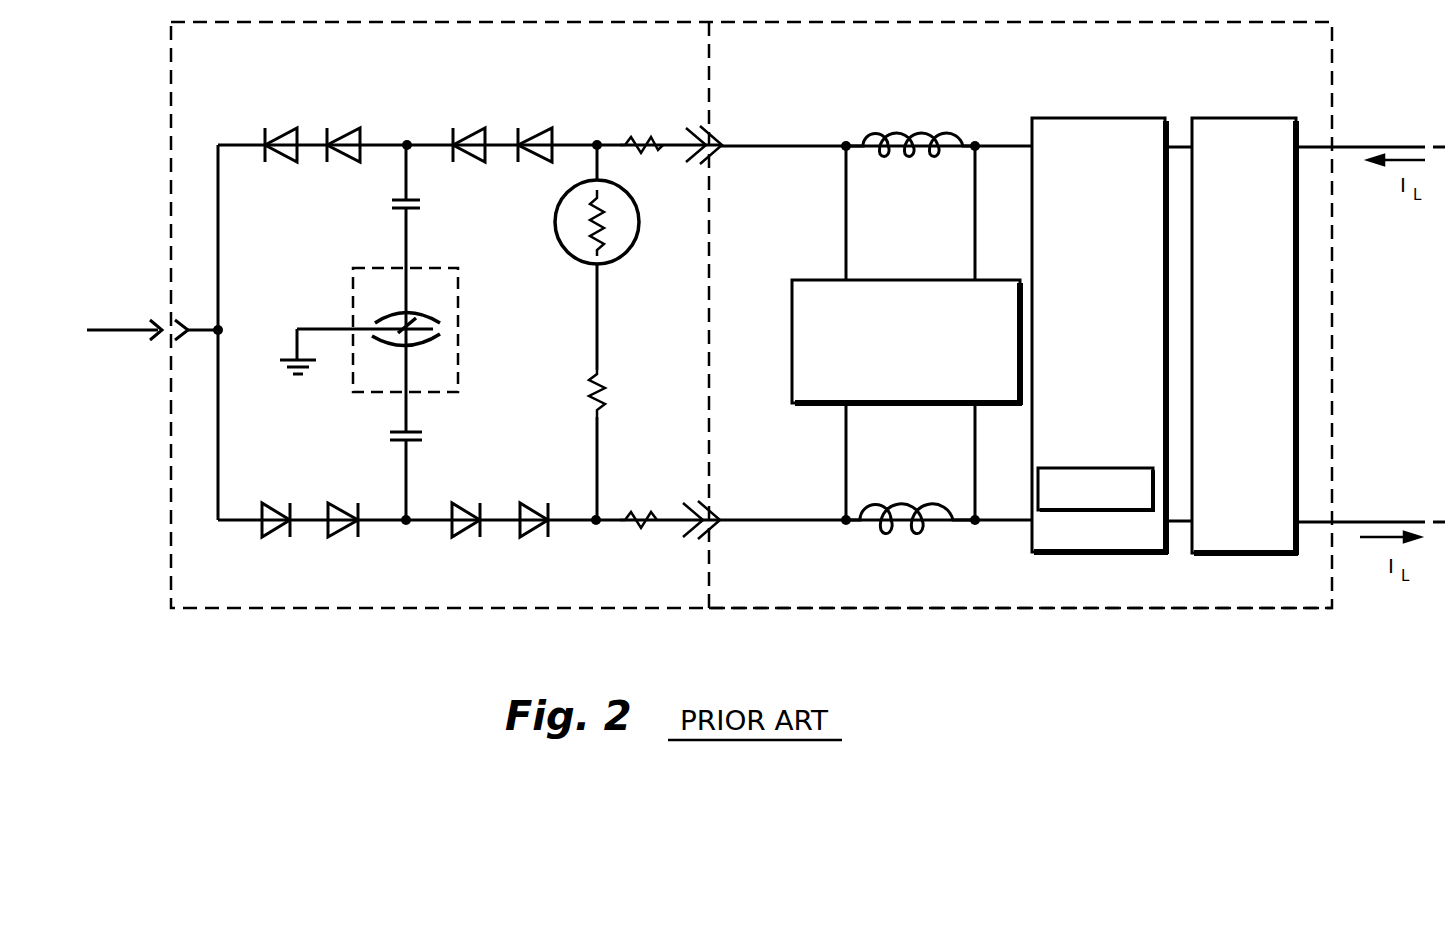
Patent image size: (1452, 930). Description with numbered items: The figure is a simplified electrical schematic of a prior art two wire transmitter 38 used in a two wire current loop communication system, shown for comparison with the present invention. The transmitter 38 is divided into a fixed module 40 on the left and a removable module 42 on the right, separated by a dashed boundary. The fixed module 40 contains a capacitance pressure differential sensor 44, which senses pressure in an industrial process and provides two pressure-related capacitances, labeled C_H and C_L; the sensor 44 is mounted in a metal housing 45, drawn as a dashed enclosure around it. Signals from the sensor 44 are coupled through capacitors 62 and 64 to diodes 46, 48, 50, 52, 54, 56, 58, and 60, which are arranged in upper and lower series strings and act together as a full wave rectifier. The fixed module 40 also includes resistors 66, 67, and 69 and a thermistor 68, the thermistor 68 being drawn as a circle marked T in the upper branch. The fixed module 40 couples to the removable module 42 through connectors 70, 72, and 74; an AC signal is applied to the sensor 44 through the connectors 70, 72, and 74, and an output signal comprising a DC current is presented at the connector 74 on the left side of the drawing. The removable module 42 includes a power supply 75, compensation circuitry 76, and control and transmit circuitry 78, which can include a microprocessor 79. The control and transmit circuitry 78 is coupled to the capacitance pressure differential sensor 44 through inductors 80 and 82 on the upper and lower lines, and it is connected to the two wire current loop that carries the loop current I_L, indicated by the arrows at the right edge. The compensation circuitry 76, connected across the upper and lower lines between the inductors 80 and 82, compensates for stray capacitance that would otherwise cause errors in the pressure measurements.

The two wire transmitter 38 is at (160, 105).
The fixed module 40 is at (338, 612).
The removable module 42 is at (912, 612).
The capacitance pressure differential sensor 44 is at (436, 338).
The metal housing 45 is at (444, 276).
The diode 46 is at (278, 126).
The diode 48 is at (355, 126).
The diode 50 is at (465, 126).
The diode 52 is at (530, 126).
The diode 54 is at (265, 535).
The diode 56 is at (328, 533).
The diode 58 is at (468, 533).
The diode 60 is at (523, 535).
The capacitor 62 is at (388, 205).
The capacitor 64 is at (386, 432).
The resistor 66 is at (600, 378).
The resistor 67 is at (656, 534).
The thermistor 68 is at (562, 254).
The resistor 69 is at (638, 138).
The connector 70 is at (714, 132).
The connector 72 is at (712, 530).
The connector 74 is at (156, 305).
The power supply 75 is at (1254, 438).
The compensation circuitry 76 is at (1007, 405).
The control and transmit circuitry 78 is at (1114, 440).
The microprocessor 79 is at (1075, 512).
The inductor 80 is at (912, 130).
The inductor 82 is at (882, 530).